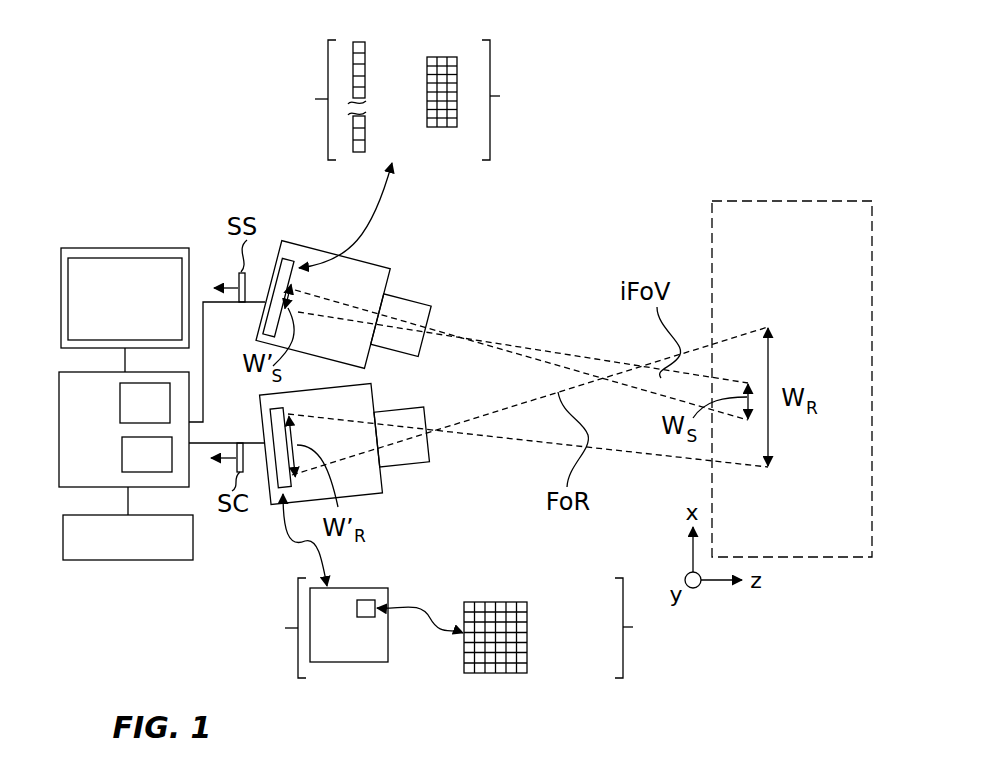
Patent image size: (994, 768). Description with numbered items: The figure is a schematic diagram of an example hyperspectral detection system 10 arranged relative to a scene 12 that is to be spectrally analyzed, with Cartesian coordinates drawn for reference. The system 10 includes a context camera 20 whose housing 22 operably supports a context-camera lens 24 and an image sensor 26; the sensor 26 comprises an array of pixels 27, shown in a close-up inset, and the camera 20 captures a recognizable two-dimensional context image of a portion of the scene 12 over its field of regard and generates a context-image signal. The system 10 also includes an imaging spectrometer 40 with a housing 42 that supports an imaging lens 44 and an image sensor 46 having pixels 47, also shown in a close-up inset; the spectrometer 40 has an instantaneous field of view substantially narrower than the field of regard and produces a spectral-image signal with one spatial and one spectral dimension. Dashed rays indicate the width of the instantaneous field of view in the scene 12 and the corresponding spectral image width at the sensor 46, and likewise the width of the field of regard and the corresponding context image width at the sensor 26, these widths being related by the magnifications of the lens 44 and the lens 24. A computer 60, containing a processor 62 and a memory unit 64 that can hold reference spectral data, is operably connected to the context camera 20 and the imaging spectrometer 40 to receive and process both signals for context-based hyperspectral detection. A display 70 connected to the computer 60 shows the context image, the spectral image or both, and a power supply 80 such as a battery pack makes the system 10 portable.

The hyperspectral detection system 10 is at (145, 164).
The scene 12 is at (760, 201).
The context camera 20 is at (378, 467).
The housing 22 is at (321, 443).
The context-camera lens 24 is at (401, 437).
The image sensor 26 is at (267, 431).
The pixels 27 is at (523, 605).
The imaging spectrometer 40 is at (363, 282).
The housing 42 is at (323, 305).
The imaging lens 44 is at (401, 325).
The image sensor 46 is at (282, 239).
The pixels 47 is at (427, 70).
The computer 60 is at (73, 447).
The processor 62 is at (132, 467).
The memory unit 64 is at (129, 416).
The display 70 is at (110, 313).
The power supply 80 is at (113, 549).